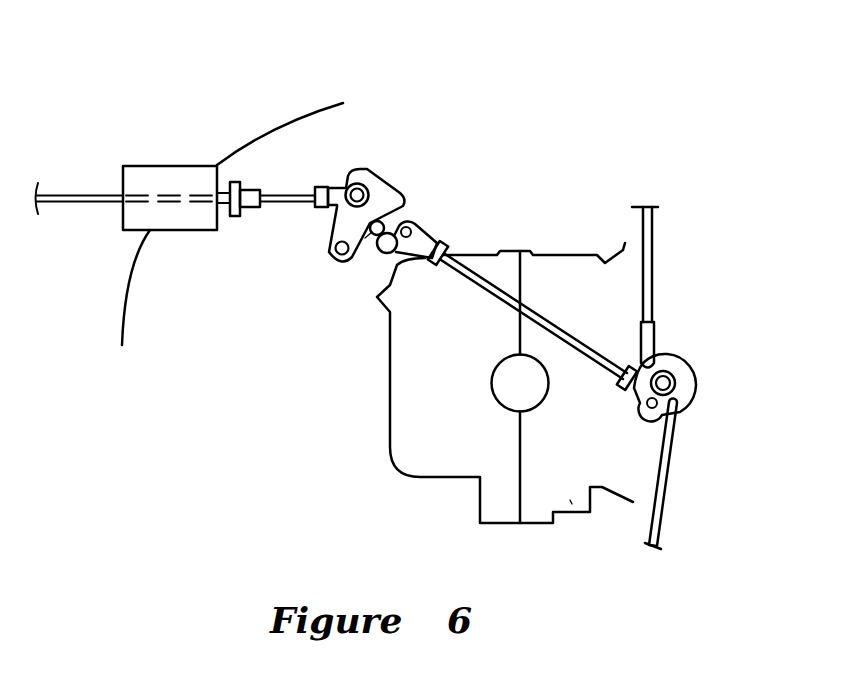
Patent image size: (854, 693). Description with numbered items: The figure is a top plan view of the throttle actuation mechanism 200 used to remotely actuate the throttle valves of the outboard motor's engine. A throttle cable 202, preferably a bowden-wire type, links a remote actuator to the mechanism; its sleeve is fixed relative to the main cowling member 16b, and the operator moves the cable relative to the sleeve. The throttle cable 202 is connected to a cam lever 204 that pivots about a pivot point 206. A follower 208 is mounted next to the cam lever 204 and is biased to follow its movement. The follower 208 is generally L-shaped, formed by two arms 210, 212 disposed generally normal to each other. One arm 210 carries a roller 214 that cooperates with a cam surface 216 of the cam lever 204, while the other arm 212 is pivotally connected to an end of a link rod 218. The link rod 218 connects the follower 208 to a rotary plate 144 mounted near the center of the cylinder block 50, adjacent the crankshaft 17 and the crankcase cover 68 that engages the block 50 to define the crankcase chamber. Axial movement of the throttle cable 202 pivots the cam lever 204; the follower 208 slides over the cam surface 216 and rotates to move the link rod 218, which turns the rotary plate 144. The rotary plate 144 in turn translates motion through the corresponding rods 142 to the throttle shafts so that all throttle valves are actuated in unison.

The main cowling member 16b is at (293, 122).
The actuation mechanism 200 is at (412, 87).
The throttle cable 202 is at (87, 195).
The cam lever 204 is at (375, 186).
The pivot point 206 is at (332, 247).
The follower 208 is at (378, 247).
The arm 210 is at (389, 221).
The arm 212 is at (398, 248).
The roller 214 is at (365, 238).
The cam surface 216 is at (400, 210).
The link rod 218 is at (492, 287).
The rod 142 is at (648, 263).
The rotary plate 144 is at (683, 377).
The crankshaft 17 is at (503, 385).
The crankcase cover 68 is at (432, 463).
The cylinder block 50 is at (570, 500).